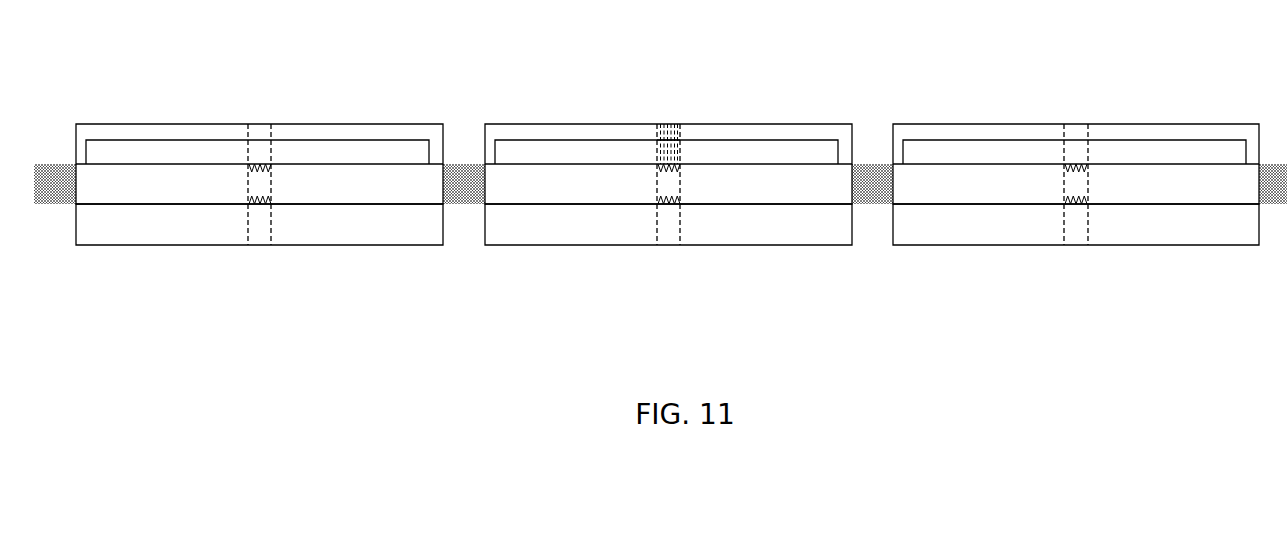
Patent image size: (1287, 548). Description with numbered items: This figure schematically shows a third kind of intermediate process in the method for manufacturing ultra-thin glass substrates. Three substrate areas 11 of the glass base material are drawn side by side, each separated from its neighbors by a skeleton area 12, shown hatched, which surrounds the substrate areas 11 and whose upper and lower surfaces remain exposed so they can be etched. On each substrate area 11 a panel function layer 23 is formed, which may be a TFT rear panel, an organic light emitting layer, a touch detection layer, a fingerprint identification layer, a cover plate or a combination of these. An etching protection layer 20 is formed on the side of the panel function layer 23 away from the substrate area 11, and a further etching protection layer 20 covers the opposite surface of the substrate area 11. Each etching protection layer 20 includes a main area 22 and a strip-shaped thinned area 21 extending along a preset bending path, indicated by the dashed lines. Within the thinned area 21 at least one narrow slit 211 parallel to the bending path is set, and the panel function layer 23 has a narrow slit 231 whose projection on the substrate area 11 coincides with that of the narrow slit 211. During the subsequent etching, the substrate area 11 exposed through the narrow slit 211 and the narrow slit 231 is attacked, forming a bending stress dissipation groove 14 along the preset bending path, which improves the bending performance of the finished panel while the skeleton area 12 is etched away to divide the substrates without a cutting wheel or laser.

The substrate area 11 is at (667, 184).
The skeleton area 12 is at (55, 185).
The bending stress dissipation groove 14 is at (255, 205).
The etching protection layer 20 is at (90, 124).
The thinned area 21 is at (257, 137).
The narrow slit 211 is at (682, 132).
The main area 22 is at (145, 133).
The panel function layer 23 is at (365, 155).
The narrow slit 231 is at (657, 140).